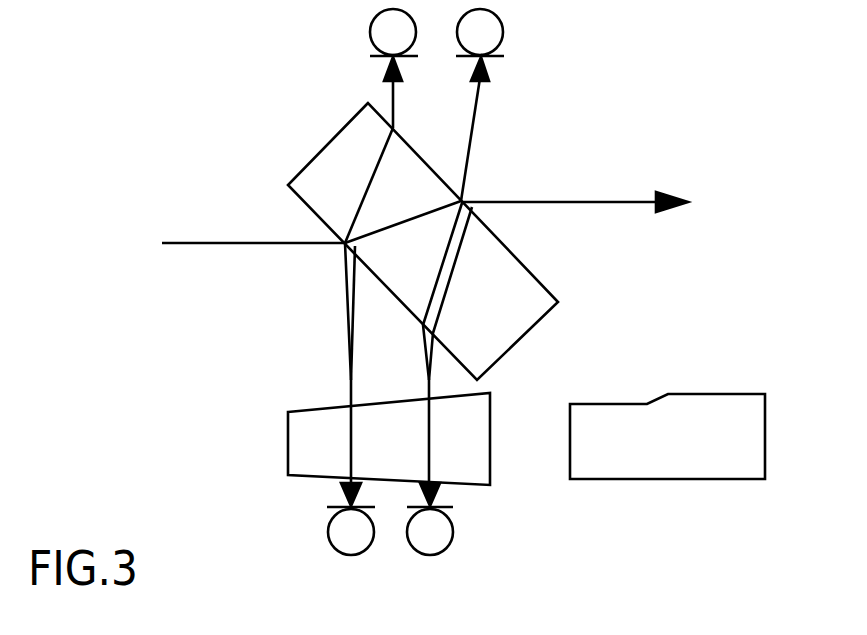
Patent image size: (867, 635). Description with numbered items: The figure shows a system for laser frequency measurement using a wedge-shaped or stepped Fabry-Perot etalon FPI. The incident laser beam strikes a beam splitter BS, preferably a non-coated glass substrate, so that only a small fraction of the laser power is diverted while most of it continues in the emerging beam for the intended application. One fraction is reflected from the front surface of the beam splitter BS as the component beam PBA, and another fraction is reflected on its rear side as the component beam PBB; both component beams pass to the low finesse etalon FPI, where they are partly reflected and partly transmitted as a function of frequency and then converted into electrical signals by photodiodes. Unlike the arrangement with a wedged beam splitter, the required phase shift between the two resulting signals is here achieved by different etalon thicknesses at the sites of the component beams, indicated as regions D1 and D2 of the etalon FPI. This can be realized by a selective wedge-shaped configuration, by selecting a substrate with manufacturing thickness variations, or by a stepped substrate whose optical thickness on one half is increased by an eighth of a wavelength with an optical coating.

The beam splitter BS is at (437, 241).
The component beam PBA is at (316, 364).
The component beam PBB is at (417, 344).
The Fabry-Perot etalon FPI is at (501, 439).
The first etalon thickness region D1 is at (494, 444).
The second etalon thickness region D2 is at (586, 444).